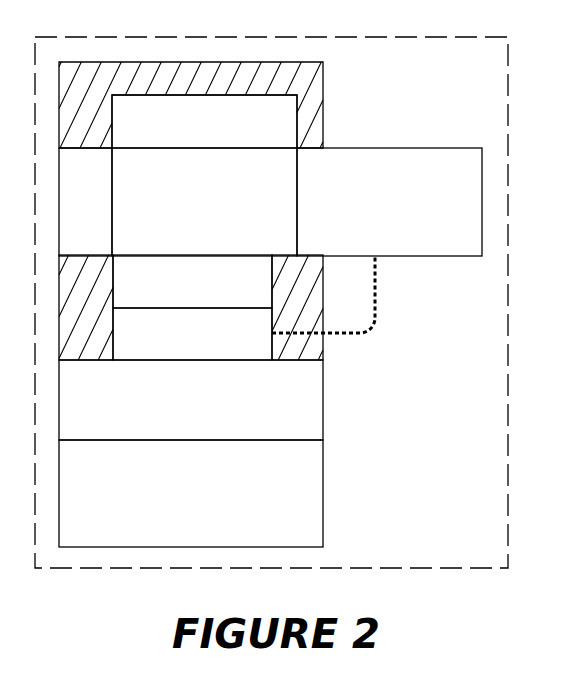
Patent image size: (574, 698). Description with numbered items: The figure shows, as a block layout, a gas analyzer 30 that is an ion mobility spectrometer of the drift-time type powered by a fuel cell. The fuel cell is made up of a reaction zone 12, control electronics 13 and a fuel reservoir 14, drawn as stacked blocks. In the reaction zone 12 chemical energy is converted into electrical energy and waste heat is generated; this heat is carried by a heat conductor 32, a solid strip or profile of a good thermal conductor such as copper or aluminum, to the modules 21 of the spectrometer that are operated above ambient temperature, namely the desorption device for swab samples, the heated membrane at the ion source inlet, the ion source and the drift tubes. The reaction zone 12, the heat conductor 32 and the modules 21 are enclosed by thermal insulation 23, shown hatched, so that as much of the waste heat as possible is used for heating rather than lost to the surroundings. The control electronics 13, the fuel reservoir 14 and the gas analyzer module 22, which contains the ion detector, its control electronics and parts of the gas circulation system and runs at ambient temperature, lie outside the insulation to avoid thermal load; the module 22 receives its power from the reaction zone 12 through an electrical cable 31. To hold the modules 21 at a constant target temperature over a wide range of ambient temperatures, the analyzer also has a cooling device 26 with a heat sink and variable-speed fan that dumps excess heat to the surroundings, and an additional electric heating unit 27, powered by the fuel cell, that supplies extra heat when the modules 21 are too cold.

The reaction zone 12 is at (192, 334).
The control electronics 13 is at (191, 400).
The fuel reservoir 14 is at (191, 493).
The modules 21 is at (204, 202).
The gas analyzer module 22 is at (389, 202).
The thermal insulation 23 is at (191, 105).
The cooling device 26 is at (85, 202).
The additional electric heating unit 27 is at (204, 121).
The gas analyzer 30 is at (271, 302).
The electrical cable 31 is at (362, 338).
The heat conductor 32 is at (192, 281).